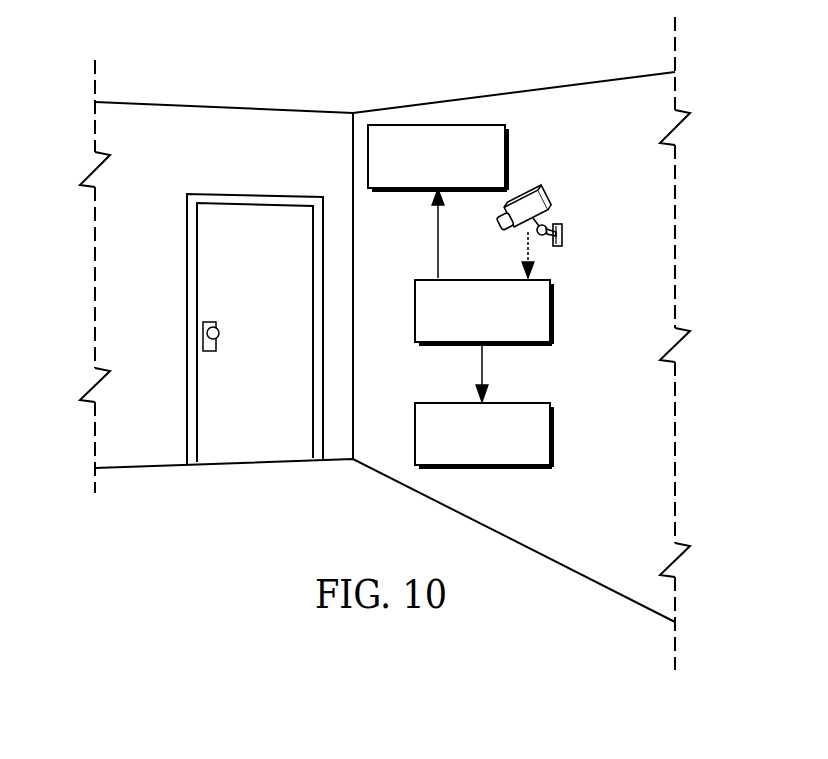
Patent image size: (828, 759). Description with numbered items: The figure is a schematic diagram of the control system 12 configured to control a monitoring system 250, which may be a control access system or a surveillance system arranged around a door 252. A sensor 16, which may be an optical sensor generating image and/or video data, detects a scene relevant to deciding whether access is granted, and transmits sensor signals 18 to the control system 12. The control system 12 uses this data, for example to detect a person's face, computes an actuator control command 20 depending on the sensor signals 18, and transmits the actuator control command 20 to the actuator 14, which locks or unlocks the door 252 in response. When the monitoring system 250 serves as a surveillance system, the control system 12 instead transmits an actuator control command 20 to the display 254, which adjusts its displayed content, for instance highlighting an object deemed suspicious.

The monitoring system 250 is at (543, 54).
The door 252 is at (237, 375).
The actuator 14 is at (508, 158).
The sensor 16 is at (551, 205).
The sensor signals 18 is at (525, 245).
The control system 12 is at (553, 313).
The actuator control command 20 is at (435, 232).
The display 254 is at (553, 433).